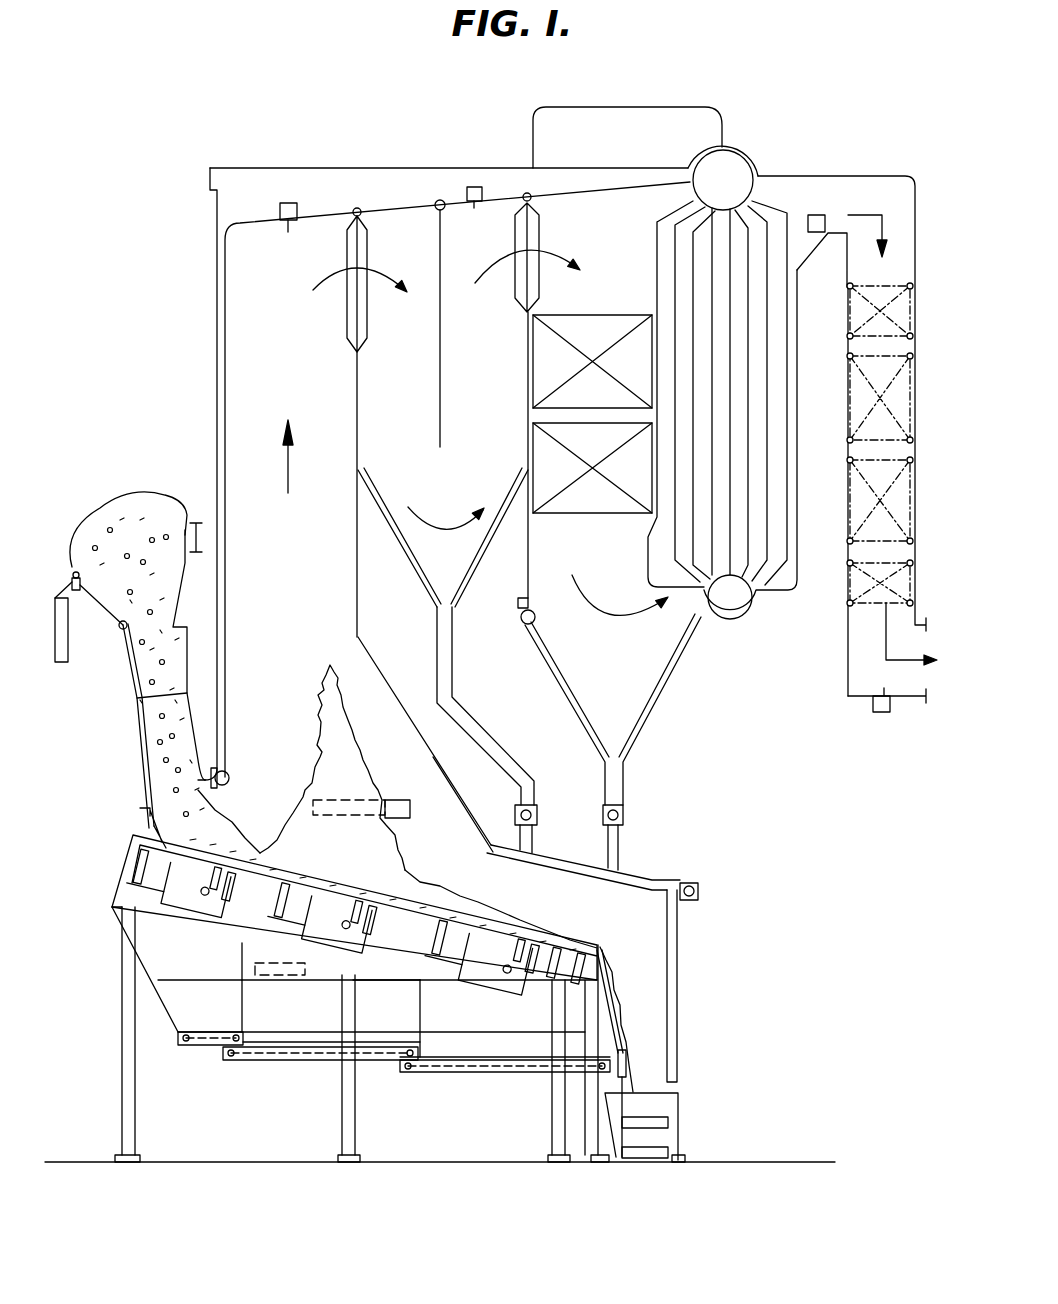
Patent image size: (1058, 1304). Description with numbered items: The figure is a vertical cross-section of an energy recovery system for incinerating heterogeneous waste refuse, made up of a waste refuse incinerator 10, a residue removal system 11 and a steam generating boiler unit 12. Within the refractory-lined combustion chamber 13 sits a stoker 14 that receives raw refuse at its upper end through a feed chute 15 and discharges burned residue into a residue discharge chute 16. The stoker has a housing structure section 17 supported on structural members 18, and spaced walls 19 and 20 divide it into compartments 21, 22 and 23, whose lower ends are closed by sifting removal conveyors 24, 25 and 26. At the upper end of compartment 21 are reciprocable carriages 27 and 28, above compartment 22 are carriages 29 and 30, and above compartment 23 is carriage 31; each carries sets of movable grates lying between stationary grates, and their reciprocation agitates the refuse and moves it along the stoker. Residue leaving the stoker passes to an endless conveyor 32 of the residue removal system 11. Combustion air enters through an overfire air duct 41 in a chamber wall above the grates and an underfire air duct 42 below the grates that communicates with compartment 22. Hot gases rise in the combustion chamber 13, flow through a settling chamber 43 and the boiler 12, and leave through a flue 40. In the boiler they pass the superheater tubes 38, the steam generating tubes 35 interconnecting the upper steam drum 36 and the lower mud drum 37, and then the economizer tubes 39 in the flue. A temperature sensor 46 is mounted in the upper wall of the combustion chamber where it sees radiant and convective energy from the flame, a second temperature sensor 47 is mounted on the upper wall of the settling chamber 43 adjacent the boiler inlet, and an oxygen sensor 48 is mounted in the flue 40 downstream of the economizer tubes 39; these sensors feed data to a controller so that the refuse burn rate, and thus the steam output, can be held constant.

The waste refuse incinerator 10 is at (130, 835).
The residue removal system 11 is at (688, 1105).
The steam generating boiler unit 12 is at (775, 172).
The combustion chamber 13 is at (296, 661).
The stoker 14 is at (110, 921).
The feed chute 15 is at (143, 760).
The residue discharge chute 16 is at (650, 1022).
The housing structure section 17 is at (157, 951).
The structural members 18 is at (120, 1097).
The wall 19 is at (242, 1000).
The wall 20 is at (422, 991).
The compartment 21 is at (194, 967).
The compartment 22 is at (305, 1012).
The compartment 23 is at (499, 1012).
The sifting removal conveyor 24 is at (210, 1047).
The sifting removal conveyor 25 is at (283, 1062).
The sifting removal conveyor 26 is at (460, 1075).
The reciprocable carriage 27 is at (172, 856).
The reciprocable carriage 28 is at (112, 918).
The reciprocable carriage 29 is at (287, 937).
The reciprocable carriage 30 is at (375, 979).
The reciprocable carriage 31 is at (492, 954).
The endless conveyor 32 is at (655, 1125).
The steam generating tubes 35 is at (657, 237).
The upper steam drum 36 is at (687, 168).
The lower mud drum 37 is at (735, 630).
The superheater tubes 38 is at (604, 318).
The economizer tubes 39 is at (893, 382).
The flue 40 is at (890, 588).
The overfire air duct 41 is at (519, 679).
The underfire air duct 42 is at (306, 970).
The settling chamber 43 is at (434, 475).
The combustion chamber temperature sensor 46 is at (280, 210).
The boiler inlet temperature sensor 47 is at (467, 193).
The oxygen sensor 48 is at (876, 716).